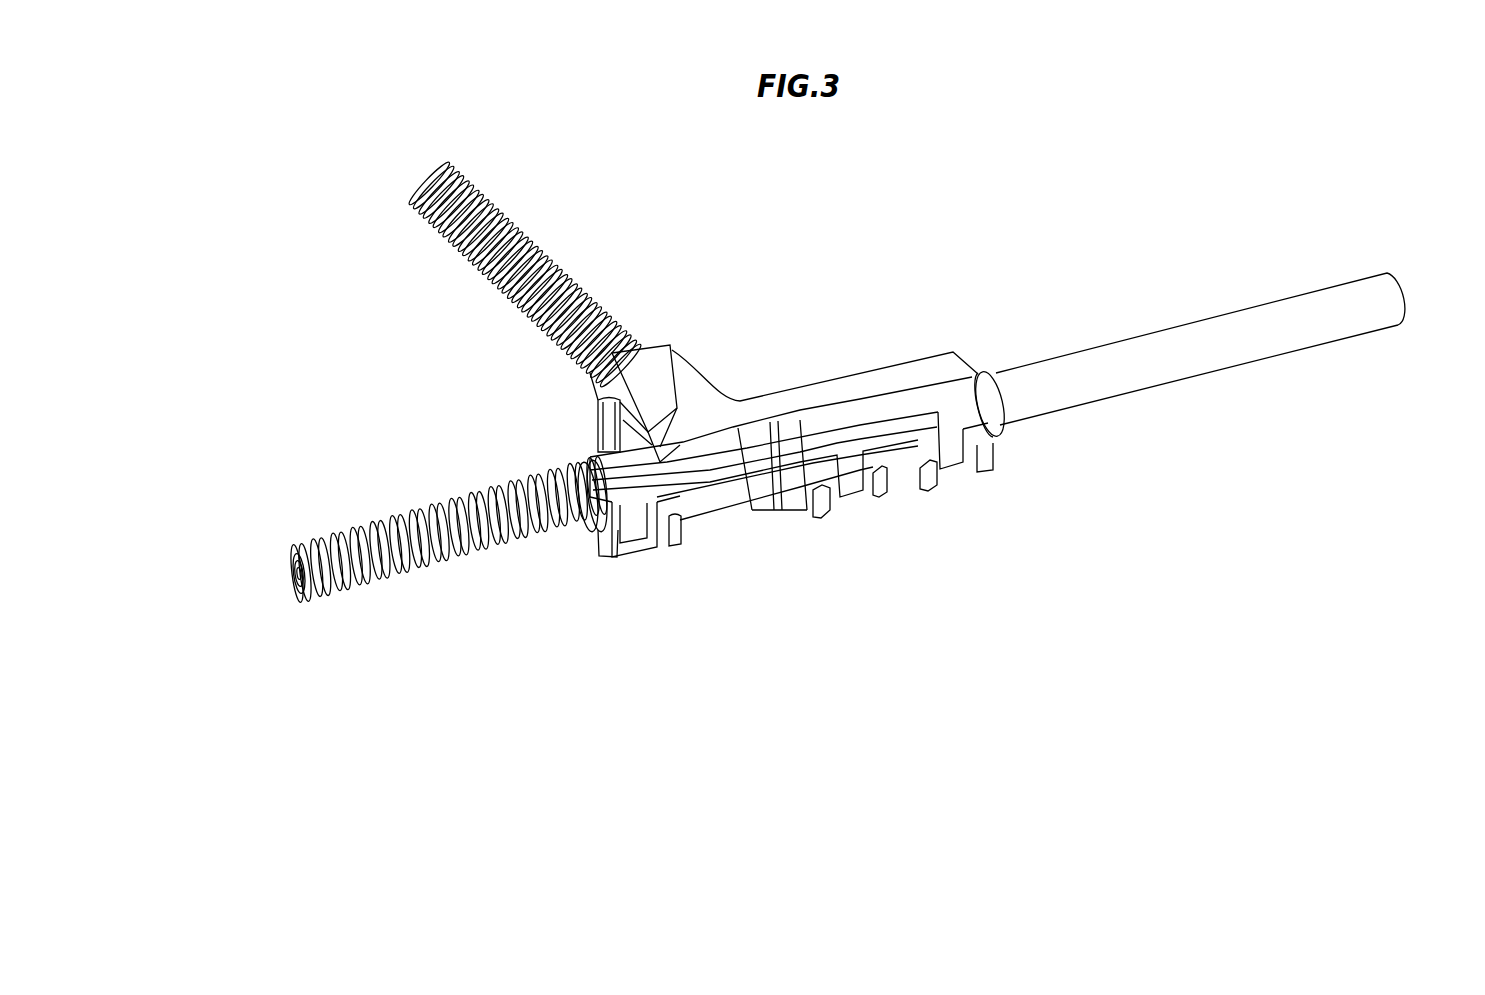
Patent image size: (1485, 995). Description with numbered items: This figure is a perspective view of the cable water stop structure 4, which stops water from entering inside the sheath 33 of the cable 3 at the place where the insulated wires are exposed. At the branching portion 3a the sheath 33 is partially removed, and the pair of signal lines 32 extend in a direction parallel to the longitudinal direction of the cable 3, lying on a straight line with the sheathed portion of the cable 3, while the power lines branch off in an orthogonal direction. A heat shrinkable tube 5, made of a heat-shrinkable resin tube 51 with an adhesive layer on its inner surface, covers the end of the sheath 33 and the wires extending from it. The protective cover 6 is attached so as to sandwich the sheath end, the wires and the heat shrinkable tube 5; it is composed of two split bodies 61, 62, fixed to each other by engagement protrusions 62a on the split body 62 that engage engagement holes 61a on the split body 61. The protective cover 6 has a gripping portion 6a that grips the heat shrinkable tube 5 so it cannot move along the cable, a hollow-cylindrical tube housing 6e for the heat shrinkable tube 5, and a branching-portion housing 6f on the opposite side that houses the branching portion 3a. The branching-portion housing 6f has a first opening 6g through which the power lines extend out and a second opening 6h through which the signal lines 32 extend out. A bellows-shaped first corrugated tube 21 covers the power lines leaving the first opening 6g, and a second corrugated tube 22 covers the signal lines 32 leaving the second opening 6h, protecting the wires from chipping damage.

The cable 3 is at (1316, 284).
The branching portion 3a is at (586, 443).
The cable water stop structure 4 is at (1075, 206).
The heat shrinkable tube 5 is at (1010, 418).
The resin tube 51 is at (997, 434).
The protective cover 6 is at (959, 348).
The gripping portion 6a is at (895, 360).
The tube housing 6e is at (832, 385).
The branching-portion housing 6f is at (709, 390).
The first opening 6g is at (661, 333).
The second opening 6h is at (594, 536).
The split body 61 is at (921, 370).
The engagement hole 61a is at (968, 466).
The split body 62 is at (908, 481).
The engagement protrusion 62a is at (955, 473).
The first corrugated tube 21 is at (510, 221).
The second corrugated tube 22 is at (377, 578).
The signal line 32 is at (293, 574).
The sheath 33 is at (1264, 345).